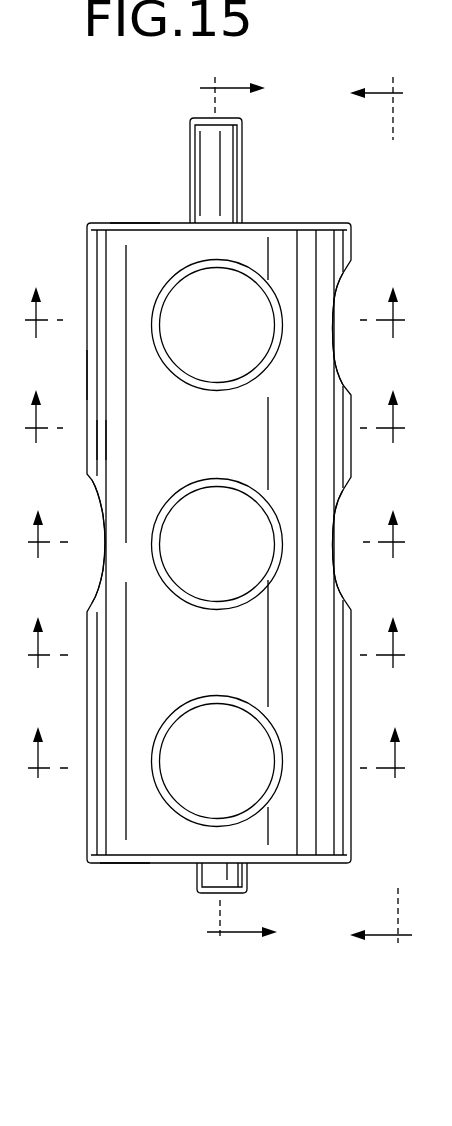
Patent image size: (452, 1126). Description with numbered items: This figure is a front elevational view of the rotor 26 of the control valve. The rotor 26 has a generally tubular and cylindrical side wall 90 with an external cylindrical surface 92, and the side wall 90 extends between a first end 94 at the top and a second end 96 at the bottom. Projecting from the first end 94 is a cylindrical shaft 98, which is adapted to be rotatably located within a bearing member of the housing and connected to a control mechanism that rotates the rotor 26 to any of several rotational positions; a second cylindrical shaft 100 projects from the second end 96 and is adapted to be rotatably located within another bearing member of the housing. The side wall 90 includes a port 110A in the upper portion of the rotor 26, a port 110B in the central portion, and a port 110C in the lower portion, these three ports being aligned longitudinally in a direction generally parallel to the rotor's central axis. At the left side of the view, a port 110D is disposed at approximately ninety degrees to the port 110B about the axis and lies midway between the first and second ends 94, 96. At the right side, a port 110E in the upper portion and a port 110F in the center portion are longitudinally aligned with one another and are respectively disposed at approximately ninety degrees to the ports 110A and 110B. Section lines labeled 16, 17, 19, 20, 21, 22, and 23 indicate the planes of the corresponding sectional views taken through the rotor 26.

The section line 16- 16 is at (230, 512).
The section line 17- 17 is at (393, 513).
The section line 19- 19 is at (220, 739).
The section line 20- 20 is at (219, 628).
The section line 21- 21 is at (222, 521).
The section line 22- 22 is at (217, 403).
The section line 23- 23 is at (216, 297).
The rotor 26 is at (358, 202).
The side wall 90 is at (86, 373).
The external cylindrical surface 92 is at (113, 435).
The first end 94 is at (133, 222).
The second end 96 is at (128, 863).
The cylindrical shaft 98 is at (242, 182).
The cylindrical shaft 100 is at (248, 870).
The port 110A is at (162, 306).
The port 110B is at (163, 528).
The port 110C is at (173, 732).
The port 110D is at (103, 530).
The port 110E is at (334, 300).
The port 110F is at (337, 542).